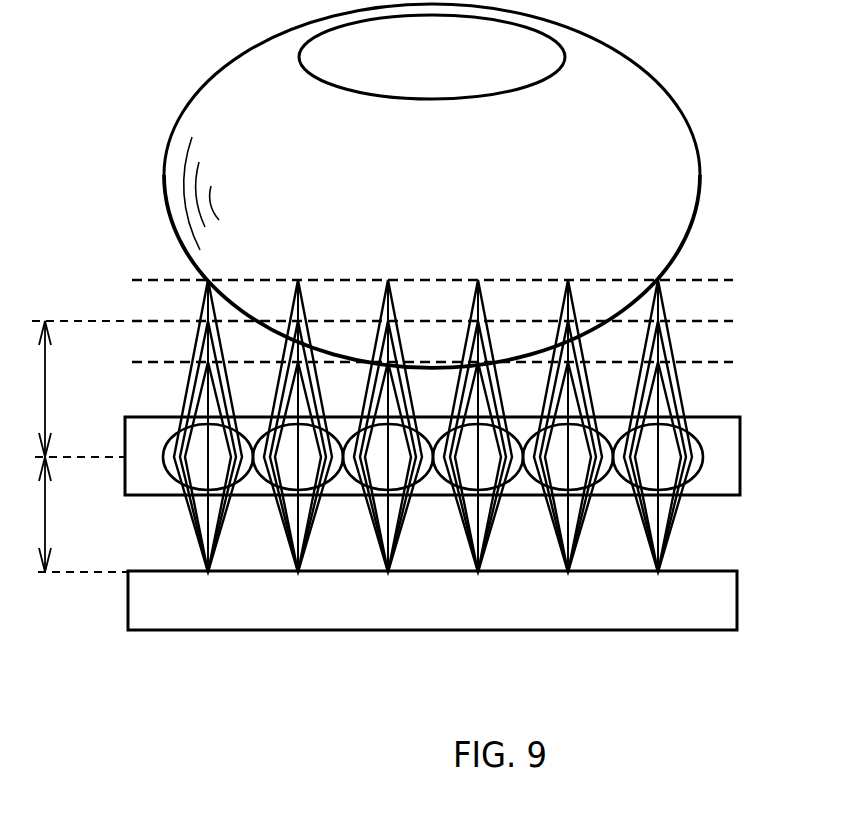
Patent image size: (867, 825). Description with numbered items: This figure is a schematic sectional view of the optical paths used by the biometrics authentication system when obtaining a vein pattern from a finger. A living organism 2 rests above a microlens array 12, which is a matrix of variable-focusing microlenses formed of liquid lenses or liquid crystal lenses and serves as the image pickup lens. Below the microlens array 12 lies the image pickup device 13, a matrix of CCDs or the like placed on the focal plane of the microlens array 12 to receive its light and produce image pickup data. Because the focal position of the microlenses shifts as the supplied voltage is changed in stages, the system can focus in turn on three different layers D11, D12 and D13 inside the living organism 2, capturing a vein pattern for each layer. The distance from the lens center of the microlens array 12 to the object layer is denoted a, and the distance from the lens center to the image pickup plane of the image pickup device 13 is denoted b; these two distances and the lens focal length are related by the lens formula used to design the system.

The living organism 2 is at (728, 81).
The microlens array 12 is at (730, 457).
The image pickup device 13 is at (727, 599).
The first layer inside the living organism D11 is at (459, 279).
The second layer inside the living organism D12 is at (459, 321).
The third layer inside the living organism D13 is at (459, 362).
The distance from the lens center to the object a is at (24, 392).
The distance from the lens center to the image pickup plane b is at (25, 517).